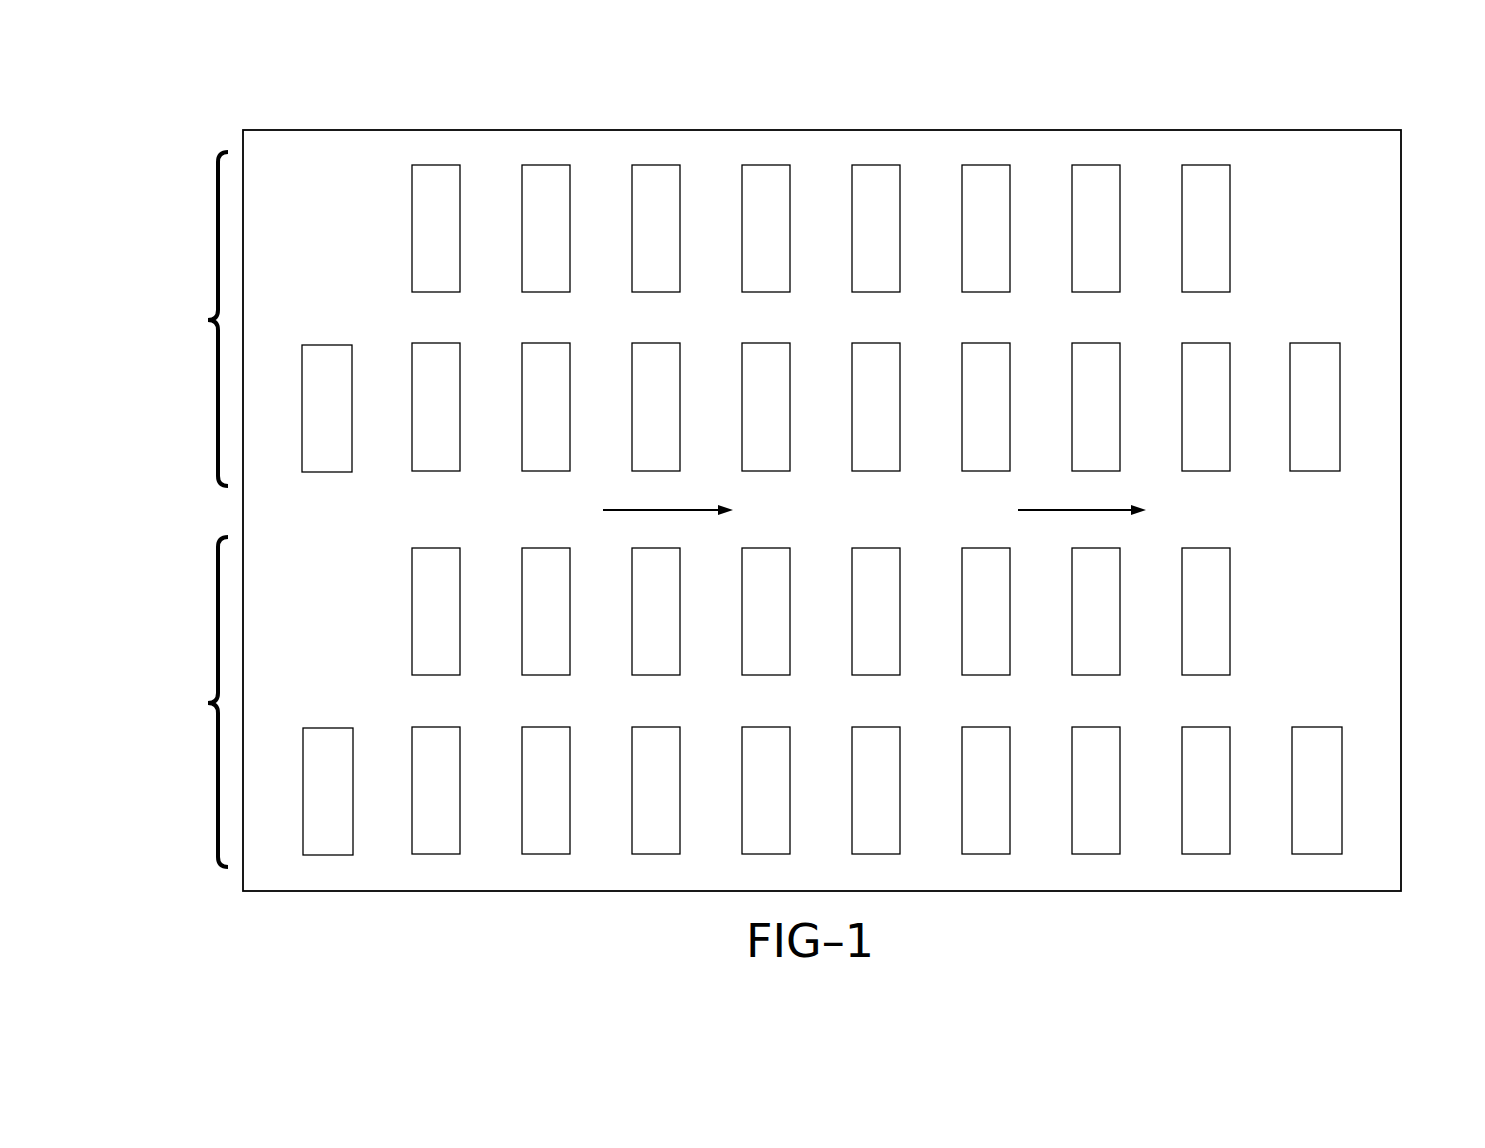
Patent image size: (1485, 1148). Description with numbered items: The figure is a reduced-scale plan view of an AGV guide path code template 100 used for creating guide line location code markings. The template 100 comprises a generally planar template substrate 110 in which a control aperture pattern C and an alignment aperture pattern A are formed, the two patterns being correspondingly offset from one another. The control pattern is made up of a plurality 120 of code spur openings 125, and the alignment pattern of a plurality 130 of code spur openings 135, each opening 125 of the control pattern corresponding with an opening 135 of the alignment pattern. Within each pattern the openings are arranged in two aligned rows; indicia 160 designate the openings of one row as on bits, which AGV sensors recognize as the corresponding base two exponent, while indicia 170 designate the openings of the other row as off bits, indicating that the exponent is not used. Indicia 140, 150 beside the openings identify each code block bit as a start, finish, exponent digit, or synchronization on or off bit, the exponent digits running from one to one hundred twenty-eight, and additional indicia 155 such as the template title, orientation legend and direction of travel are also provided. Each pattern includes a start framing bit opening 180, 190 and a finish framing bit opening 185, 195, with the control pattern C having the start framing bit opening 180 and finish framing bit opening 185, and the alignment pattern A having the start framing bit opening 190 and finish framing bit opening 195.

The AGV guide path code template 100 is at (1008, 908).
The template substrate 110 is at (1378, 891).
The plurality of code spur openings of the control aperture pattern 120 is at (288, 843).
The plurality of code spur openings of the alignment aperture pattern 130 is at (285, 478).
The code spur opening of the control aperture pattern 125 is at (1010, 643).
The code spur opening of the alignment aperture pattern 135 is at (674, 365).
The indicia 140 is at (498, 212).
The indicia 150 is at (752, 315).
The additional indicia 155 is at (312, 138).
The on bit indicia 160 is at (437, 138).
The off bit indicia 170 is at (1185, 482).
The start framing bit opening 180 is at (353, 825).
The finish framing bit opening 185 is at (1292, 768).
The start framing bit opening 190 is at (352, 442).
The finish framing bit opening 195 is at (1290, 384).